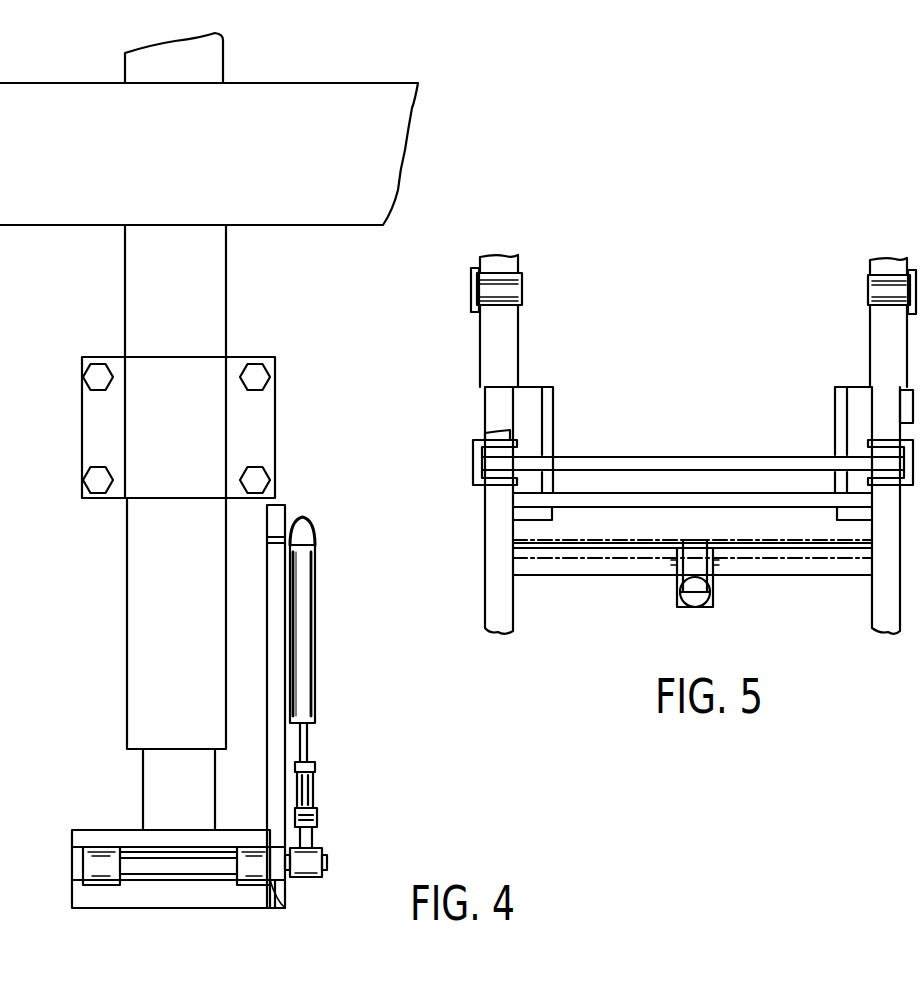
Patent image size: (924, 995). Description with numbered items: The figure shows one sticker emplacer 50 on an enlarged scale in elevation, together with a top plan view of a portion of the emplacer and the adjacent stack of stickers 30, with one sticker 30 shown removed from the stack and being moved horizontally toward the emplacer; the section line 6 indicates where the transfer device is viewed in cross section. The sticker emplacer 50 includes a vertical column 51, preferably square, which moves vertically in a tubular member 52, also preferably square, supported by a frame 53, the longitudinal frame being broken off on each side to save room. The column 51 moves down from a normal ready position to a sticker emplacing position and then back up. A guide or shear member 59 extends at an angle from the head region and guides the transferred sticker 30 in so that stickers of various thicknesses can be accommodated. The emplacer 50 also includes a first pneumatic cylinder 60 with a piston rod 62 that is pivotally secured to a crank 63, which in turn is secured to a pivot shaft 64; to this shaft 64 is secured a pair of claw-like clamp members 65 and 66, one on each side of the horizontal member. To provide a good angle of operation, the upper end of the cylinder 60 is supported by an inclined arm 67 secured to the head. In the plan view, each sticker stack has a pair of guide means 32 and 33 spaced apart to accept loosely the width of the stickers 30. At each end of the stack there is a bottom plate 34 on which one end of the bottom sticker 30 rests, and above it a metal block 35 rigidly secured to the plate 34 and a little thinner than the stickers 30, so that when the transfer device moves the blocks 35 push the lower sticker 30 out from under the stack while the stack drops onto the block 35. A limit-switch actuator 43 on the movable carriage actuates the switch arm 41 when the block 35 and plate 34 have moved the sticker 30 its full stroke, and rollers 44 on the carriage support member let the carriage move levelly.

In FIG. 5, the section line 6- 6 is at (593, 255).
In FIG. 5, the sticker 30 is at (708, 492).
In FIG. 5, the guide means 32 is at (483, 438).
In FIG. 5, the guide means 33 is at (490, 482).
In FIG. 5, the bottom plate 34 is at (548, 520).
In FIG. 5, the metal block 35 is at (538, 421).
In FIG. 5, the switch arm 41 is at (905, 405).
In FIG. 5, the limit-switch actuator 43 is at (906, 385).
In FIG. 5, the roller 44 is at (876, 284).
In FIG. 4, the sticker emplacer 50 is at (258, 307).
In FIG. 5, the sticker emplacer 50 is at (712, 615).
In FIG. 4, the vertical column 51 is at (187, 784).
In FIG. 4, the tubular member 52 is at (188, 621).
In FIG. 4, the frame 53 is at (187, 157).
In FIG. 4, the guide or shear member 59 is at (194, 858).
In FIG. 5, the guide or shear member 59 is at (700, 545).
In FIG. 4, the first pneumatic cylinder 60 is at (309, 614).
In FIG. 4, the piston rod 62 is at (309, 746).
In FIG. 4, the crank 63 is at (314, 834).
In FIG. 4, the pivot shaft 64 is at (328, 866).
In FIG. 4, the clamp member 65 is at (280, 888).
In FIG. 4, the clamp member 66 is at (100, 870).
In FIG. 4, the inclined arm 67 is at (275, 676).